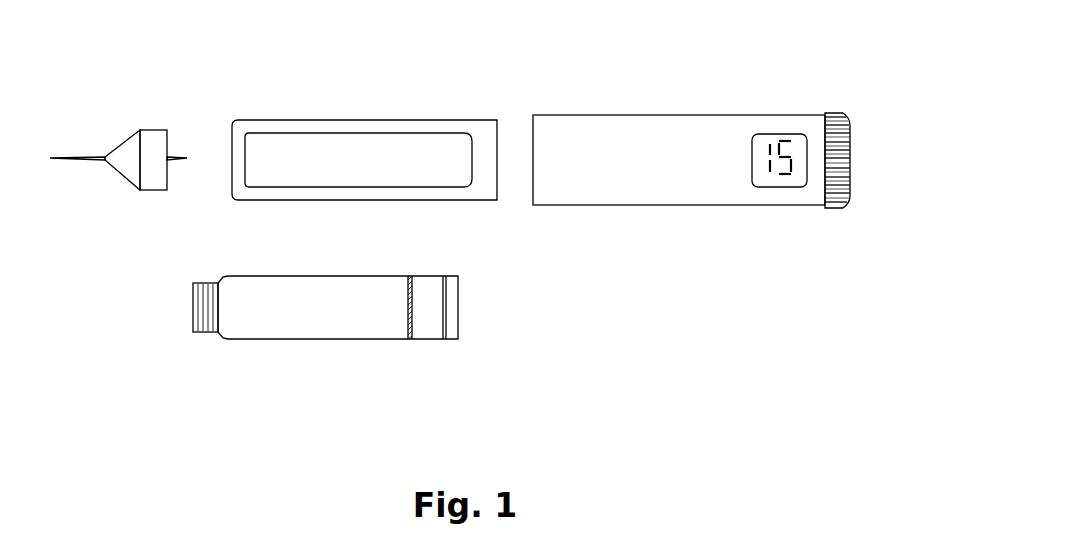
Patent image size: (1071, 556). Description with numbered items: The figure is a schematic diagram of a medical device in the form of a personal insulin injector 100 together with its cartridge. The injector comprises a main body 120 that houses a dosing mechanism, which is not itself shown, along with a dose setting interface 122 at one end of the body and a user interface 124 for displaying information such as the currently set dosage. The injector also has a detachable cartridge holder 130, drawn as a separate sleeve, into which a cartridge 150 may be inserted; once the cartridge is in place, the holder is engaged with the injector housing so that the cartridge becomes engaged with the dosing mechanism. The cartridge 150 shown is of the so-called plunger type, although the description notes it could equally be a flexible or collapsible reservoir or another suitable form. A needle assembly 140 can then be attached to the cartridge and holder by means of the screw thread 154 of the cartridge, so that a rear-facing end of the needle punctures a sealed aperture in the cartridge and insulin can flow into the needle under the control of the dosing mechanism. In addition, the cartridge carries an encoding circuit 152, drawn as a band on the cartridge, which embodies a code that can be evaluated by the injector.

The personal insulin injector 100 is at (752, 34).
The main body 120 is at (682, 113).
The dose setting interface 122 is at (825, 115).
The user interface 124 is at (765, 188).
The detachable cartridge holder 130 is at (367, 118).
The needle assembly 140 is at (142, 128).
The cartridge 150 is at (320, 340).
The encoding circuit 152 is at (423, 340).
The screw thread 154 is at (207, 335).